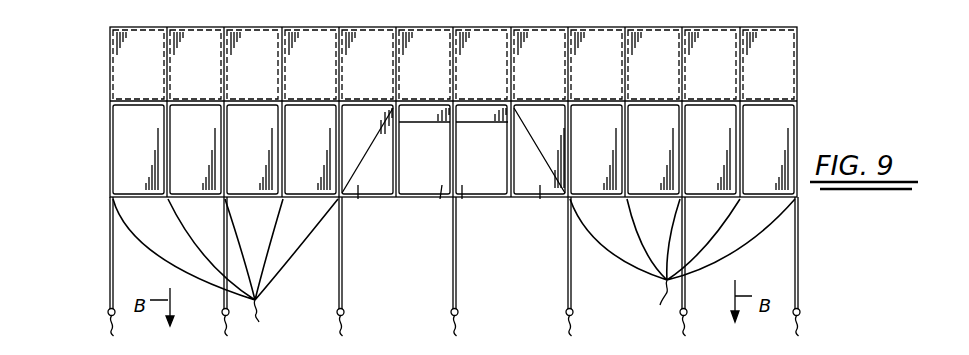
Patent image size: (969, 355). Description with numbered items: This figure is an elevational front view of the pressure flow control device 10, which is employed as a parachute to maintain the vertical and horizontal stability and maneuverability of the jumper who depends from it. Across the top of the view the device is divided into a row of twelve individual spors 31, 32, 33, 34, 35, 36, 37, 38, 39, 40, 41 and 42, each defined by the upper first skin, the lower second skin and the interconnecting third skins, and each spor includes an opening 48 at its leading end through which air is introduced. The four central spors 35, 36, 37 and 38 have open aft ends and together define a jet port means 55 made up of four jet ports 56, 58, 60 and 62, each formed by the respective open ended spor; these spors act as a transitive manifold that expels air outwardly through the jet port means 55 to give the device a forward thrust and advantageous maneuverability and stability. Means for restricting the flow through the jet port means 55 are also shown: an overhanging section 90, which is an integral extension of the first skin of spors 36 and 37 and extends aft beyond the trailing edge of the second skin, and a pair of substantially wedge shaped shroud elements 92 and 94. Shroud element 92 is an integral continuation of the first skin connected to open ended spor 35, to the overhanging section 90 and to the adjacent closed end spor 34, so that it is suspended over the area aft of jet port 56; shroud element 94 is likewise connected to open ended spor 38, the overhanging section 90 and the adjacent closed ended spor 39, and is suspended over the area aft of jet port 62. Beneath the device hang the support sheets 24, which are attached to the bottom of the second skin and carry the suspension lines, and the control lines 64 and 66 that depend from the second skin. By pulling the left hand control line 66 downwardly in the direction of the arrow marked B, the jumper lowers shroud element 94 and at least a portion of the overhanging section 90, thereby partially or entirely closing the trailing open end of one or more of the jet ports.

The pressure flow control device 10 is at (108, 74).
The support sheets 24 is at (108, 262).
The spor 31 is at (138, 64).
The spor 32 is at (195, 64).
The spor 33 is at (252, 64).
The spor 34 is at (310, 64).
The spor 35 is at (367, 64).
The spor 36 is at (424, 64).
The spor 37 is at (481, 64).
The spor 38 is at (539, 64).
The spor 39 is at (596, 64).
The spor 40 is at (653, 64).
The spor 41 is at (710, 64).
The spor 42 is at (768, 64).
The opening 48 is at (550, 136).
The jet port means 55 is at (446, 200).
The jet port 56 is at (358, 199).
The jet port 58 is at (440, 199).
The jet port 60 is at (462, 199).
The jet port 62 is at (540, 199).
The control line 64 is at (270, 287).
The control line 66 is at (651, 278).
The overhanging section 90 is at (445, 123).
The shroud element 92 is at (352, 173).
The shroud element 94 is at (552, 162).